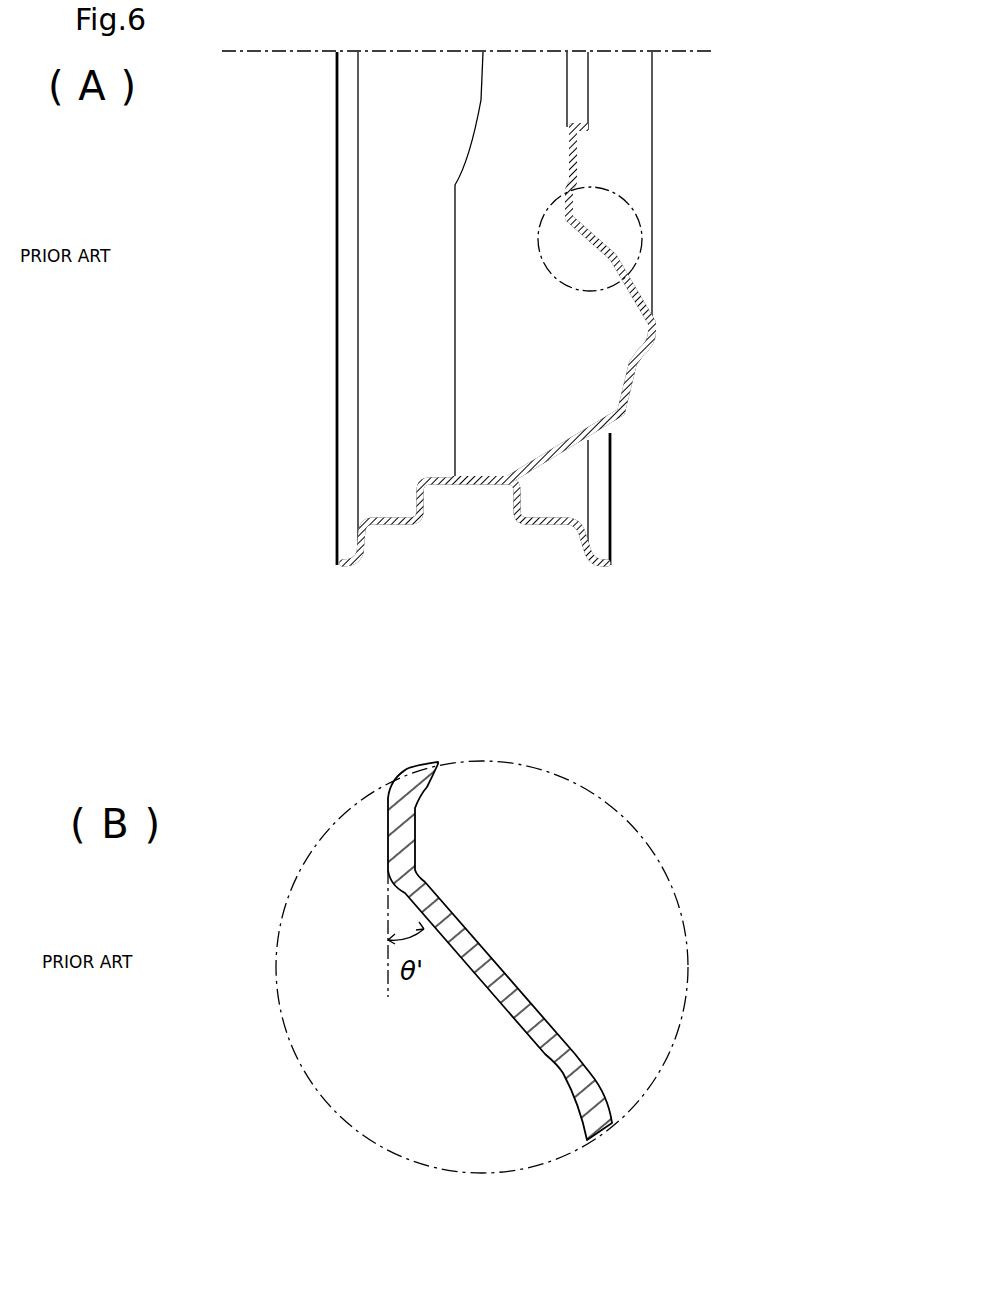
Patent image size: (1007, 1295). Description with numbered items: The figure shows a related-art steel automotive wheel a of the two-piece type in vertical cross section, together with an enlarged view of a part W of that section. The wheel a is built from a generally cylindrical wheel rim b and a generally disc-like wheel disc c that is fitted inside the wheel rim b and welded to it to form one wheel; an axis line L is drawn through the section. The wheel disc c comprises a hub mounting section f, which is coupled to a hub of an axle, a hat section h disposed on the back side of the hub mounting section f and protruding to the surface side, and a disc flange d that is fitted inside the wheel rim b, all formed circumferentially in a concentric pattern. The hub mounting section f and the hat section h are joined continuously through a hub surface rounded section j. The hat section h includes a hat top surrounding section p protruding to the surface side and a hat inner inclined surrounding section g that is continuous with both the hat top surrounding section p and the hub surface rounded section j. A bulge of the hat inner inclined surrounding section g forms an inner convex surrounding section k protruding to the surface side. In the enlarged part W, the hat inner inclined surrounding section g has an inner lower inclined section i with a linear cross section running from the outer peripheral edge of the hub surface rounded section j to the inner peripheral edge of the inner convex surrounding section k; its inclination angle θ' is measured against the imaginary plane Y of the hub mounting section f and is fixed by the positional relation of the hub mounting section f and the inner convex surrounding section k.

In FIG. 6A, the wheel axis line L is at (280, 52).
In FIG. 6A, the automotive wheel a is at (713, 104).
In FIG. 6A, the wheel rim b is at (527, 527).
In FIG. 6A, the wheel disc c is at (623, 423).
In FIG. 6A, the disc flange d is at (457, 474).
In FIG. 6A, the hub mounting section f is at (568, 137).
In FIG. 6B, the hub mounting section f is at (407, 840).
In FIG. 6A, the hat inner inclined surrounding section g is at (627, 287).
In FIG. 6B, the hat inner inclined surrounding section g is at (537, 993).
In FIG. 6A, the hat section h is at (643, 357).
In FIG. 6B, the hat section h is at (530, 1032).
In FIG. 6A, the hat top surrounding section p is at (657, 330).
In FIG. 6A, the hub surface rounded section j is at (568, 218).
In FIG. 6B, the hub surface rounded section j is at (408, 878).
In FIG. 6B, the inner lower inclined section i is at (480, 957).
In FIG. 6B, the inner convex surrounding section k is at (572, 1045).
In FIG. 6A, the part W is at (640, 218).
In FIG. 6B, the part W is at (632, 825).
In FIG. 6B, the imaginary plane Y is at (388, 970).